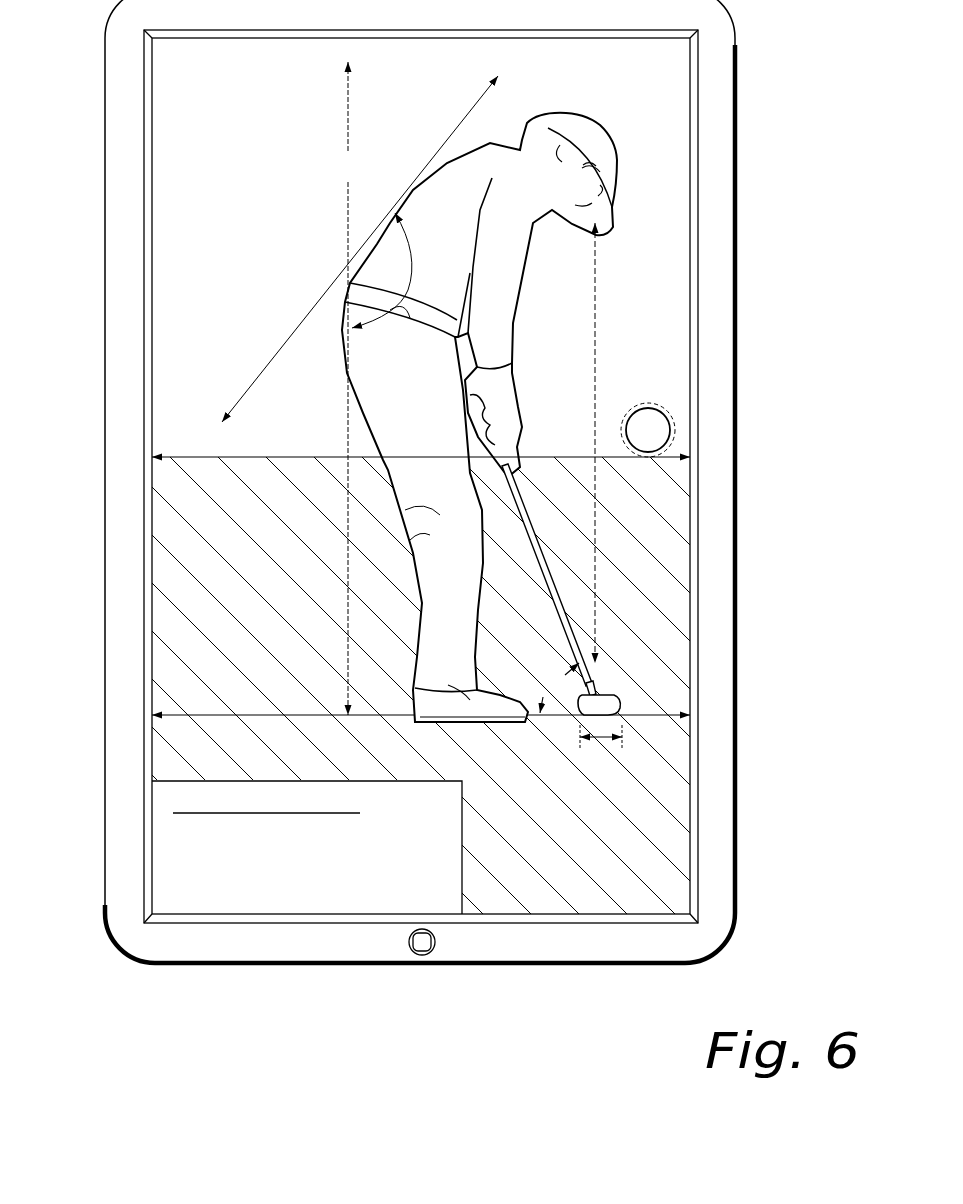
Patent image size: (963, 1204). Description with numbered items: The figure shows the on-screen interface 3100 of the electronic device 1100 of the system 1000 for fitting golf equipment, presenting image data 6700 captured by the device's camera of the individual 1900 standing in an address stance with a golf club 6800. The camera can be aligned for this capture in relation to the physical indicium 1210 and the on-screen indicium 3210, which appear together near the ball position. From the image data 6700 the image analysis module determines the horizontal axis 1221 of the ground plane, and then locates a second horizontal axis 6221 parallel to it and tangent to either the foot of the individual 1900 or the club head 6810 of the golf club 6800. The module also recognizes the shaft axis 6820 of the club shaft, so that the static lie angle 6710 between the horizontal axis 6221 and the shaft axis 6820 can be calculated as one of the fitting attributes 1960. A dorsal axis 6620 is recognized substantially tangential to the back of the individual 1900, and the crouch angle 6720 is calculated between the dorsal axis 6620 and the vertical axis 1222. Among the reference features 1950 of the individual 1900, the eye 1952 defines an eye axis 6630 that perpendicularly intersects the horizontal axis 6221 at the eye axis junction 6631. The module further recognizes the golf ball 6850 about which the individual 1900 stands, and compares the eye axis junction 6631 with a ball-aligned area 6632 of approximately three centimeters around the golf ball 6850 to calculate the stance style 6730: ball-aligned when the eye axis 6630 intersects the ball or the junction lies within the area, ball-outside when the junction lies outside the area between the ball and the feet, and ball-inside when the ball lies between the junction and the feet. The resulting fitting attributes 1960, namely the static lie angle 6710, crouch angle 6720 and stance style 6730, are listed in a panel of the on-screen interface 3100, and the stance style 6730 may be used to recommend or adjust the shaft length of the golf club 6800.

The system 1000 is at (840, 950).
The electronic device 1100 is at (232, 950).
The physical indicia 1210 is at (662, 428).
The horizontal axis 1221 is at (575, 454).
The vertical axis 1222 is at (348, 388).
The individual 1900 is at (594, 108).
The reference features 1950 is at (611, 238).
The eye 1952 is at (588, 185).
The fitting attributes 1960 is at (180, 780).
The on-screen interface 3100 is at (666, 105).
The on-screen indicium 3210 is at (650, 406).
The horizontal axis 6221 is at (302, 712).
The dorsal axis 6620 is at (360, 249).
The eye axis 6630 is at (595, 443).
The eye axis junction 6631 is at (580, 722).
The ball-aligned area 6632 is at (597, 742).
The image data 6700 is at (671, 157).
The static lie angle 6710 is at (88, 812).
The crouch angle 6720 is at (80, 870).
The stance style 6730 is at (180, 890).
The golf club 6800 is at (586, 587).
The club head 6810 is at (616, 700).
The shaft axis 6820 is at (545, 552).
The golf ball 6850 is at (606, 692).